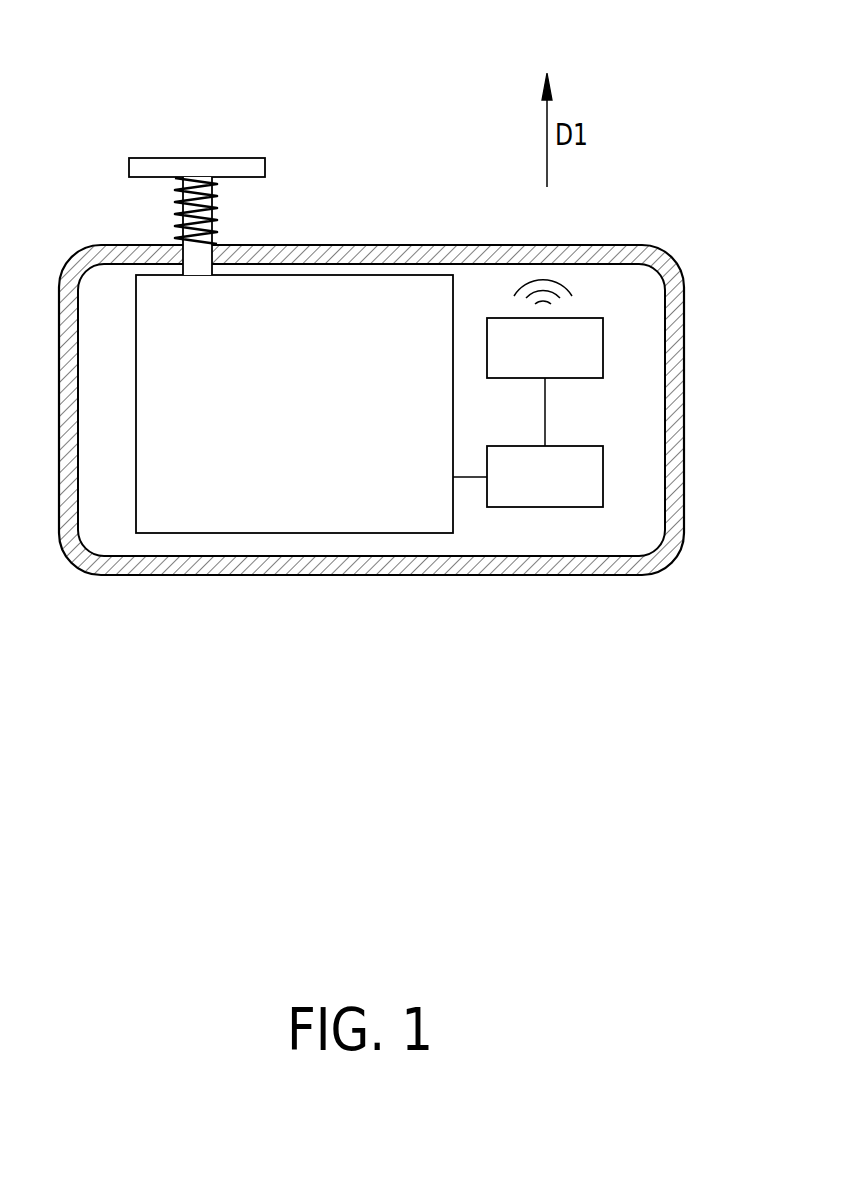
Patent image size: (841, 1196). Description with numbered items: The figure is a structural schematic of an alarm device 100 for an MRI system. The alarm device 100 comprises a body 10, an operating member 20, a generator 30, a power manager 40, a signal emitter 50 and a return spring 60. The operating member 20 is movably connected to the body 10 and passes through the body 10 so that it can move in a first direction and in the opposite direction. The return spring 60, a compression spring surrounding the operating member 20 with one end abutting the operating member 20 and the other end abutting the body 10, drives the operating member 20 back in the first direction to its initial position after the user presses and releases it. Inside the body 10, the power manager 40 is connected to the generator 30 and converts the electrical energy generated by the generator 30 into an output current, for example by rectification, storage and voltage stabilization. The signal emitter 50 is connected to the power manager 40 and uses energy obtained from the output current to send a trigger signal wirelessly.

The alarm device 100 is at (378, 93).
The body 10 is at (438, 246).
The operating member 20 is at (195, 167).
The generator 30 is at (372, 422).
The power manager 40 is at (587, 493).
The signal emitter 50 is at (582, 365).
The return spring 60 is at (217, 193).